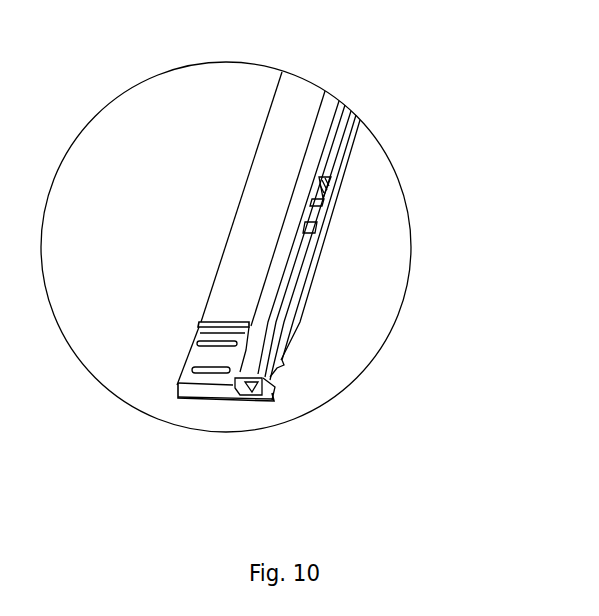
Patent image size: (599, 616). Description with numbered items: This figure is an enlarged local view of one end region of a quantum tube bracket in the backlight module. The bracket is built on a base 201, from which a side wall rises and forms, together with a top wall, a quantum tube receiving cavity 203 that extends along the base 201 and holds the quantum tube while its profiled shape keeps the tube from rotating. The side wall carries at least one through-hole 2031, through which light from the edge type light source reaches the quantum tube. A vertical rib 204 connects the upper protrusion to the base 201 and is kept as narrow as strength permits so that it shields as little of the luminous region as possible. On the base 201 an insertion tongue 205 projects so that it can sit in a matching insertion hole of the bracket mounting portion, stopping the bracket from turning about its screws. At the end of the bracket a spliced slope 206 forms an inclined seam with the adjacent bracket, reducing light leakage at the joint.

The base 201 is at (277, 155).
The through-hole 2031 is at (326, 180).
The vertical rib 204 is at (322, 190).
The insertion tongue 205 is at (200, 371).
The spliced slope 206 is at (240, 372).
The quantum tube receiving cavity 203 is at (232, 387).